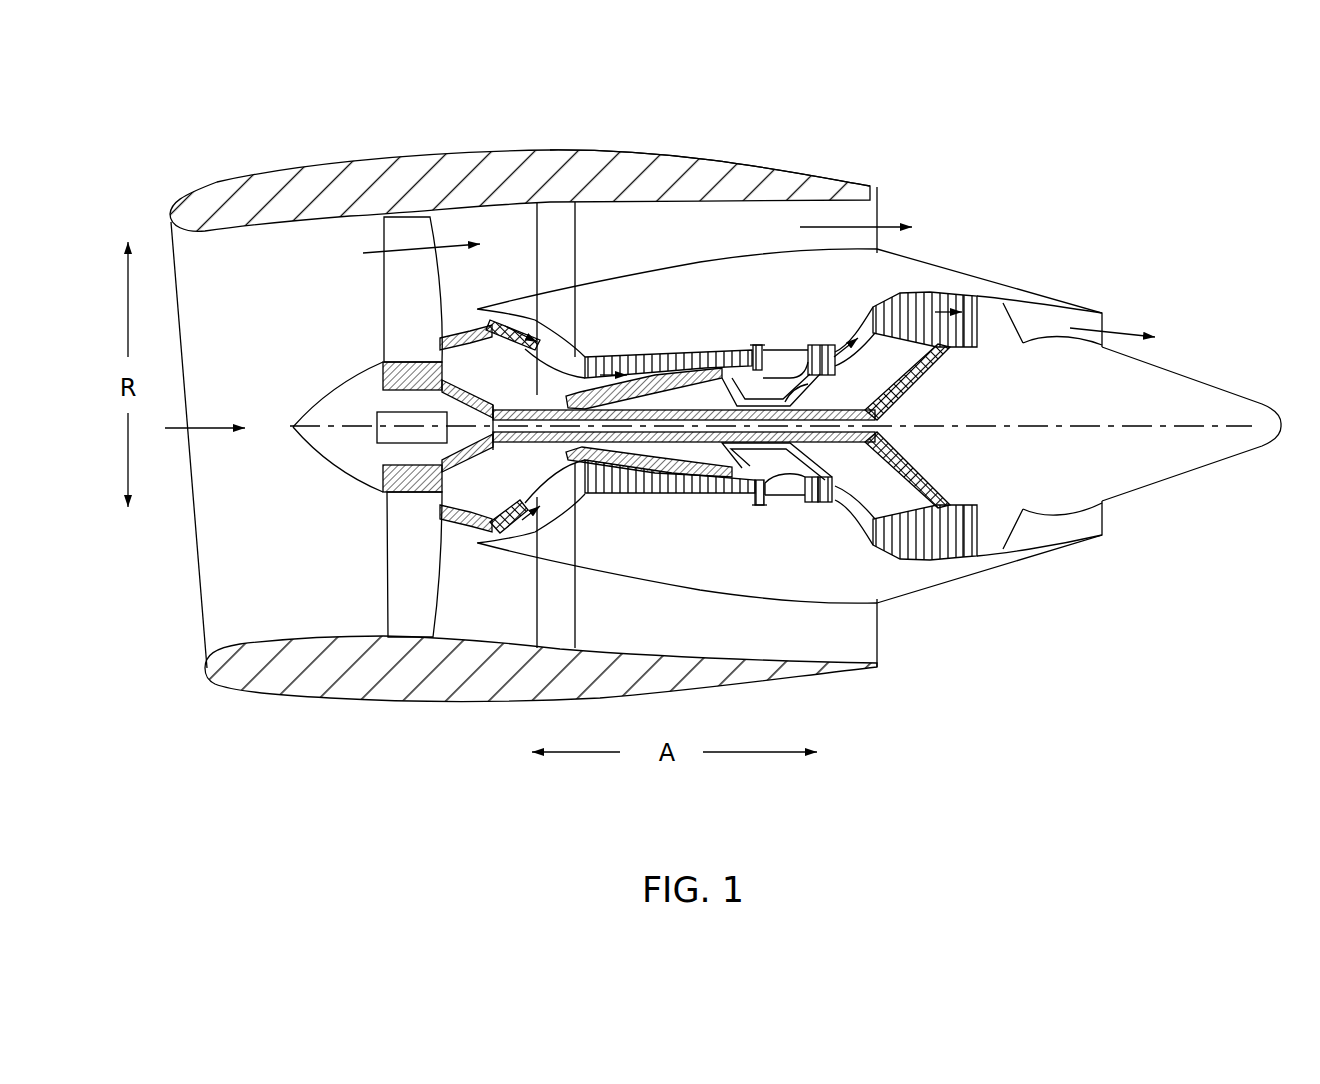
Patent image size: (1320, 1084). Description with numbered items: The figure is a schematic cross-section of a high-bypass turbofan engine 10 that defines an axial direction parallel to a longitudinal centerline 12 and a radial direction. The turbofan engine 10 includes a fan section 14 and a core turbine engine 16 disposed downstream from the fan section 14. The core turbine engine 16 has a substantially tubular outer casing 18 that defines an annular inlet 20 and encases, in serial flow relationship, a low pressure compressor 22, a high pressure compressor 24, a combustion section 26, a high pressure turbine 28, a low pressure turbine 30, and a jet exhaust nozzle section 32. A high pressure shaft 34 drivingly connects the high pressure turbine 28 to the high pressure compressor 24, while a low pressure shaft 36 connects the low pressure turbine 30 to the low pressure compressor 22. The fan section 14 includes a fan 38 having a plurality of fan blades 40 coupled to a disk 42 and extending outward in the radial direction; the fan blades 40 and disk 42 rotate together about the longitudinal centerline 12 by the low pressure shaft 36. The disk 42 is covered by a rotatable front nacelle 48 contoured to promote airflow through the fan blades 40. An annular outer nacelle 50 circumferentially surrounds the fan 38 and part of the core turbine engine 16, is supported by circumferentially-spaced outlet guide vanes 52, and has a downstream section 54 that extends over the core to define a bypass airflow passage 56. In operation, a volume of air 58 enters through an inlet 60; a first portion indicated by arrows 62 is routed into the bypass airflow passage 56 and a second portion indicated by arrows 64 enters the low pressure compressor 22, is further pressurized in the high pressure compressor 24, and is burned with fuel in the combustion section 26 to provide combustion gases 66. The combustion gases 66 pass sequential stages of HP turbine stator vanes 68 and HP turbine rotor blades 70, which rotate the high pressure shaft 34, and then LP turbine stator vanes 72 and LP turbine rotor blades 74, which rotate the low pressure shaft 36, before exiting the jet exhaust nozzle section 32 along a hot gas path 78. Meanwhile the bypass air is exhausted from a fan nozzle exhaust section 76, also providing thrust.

The turbofan engine 10 is at (1093, 204).
The longitudinal centerline 12 is at (1028, 424).
The fan section 14 is at (455, 133).
The core turbine engine 16 is at (723, 315).
The outer casing 18 is at (740, 593).
The annular inlet 20 is at (476, 538).
The low pressure compressor 22 is at (547, 508).
The high pressure compressor 24 is at (603, 498).
The combustion section 26 is at (775, 496).
The high pressure turbine 28 is at (835, 492).
The low pressure turbine 30 is at (966, 562).
The jet exhaust nozzle section 32 is at (1108, 322).
The high pressure shaft 34 is at (812, 382).
The low pressure shaft 36 is at (537, 410).
The fan 38 is at (370, 290).
The fan blades 40 is at (382, 590).
The disk 42 is at (383, 373).
The rotatable front nacelle 48 is at (318, 400).
The outer nacelle 50 is at (443, 702).
The outlet guide vanes 52 is at (577, 220).
The downstream section 54 is at (710, 158).
The bypass airflow passage 56 is at (705, 240).
The volume of air 58 is at (200, 427).
The inlet 60 is at (196, 632).
The arrows indicating first portion of air 62 is at (395, 252).
The arrows indicating second portion of air 64 is at (468, 311).
The combustion gases 66 is at (915, 292).
The HP turbine stator vanes 68 is at (808, 503).
The HP turbine rotor blades 70 is at (822, 508).
The LP turbine stator vanes 72 is at (890, 538).
The LP turbine rotor blades 74 is at (895, 540).
The fan nozzle exhaust section 76 is at (878, 207).
The hot gas path 78 is at (866, 320).